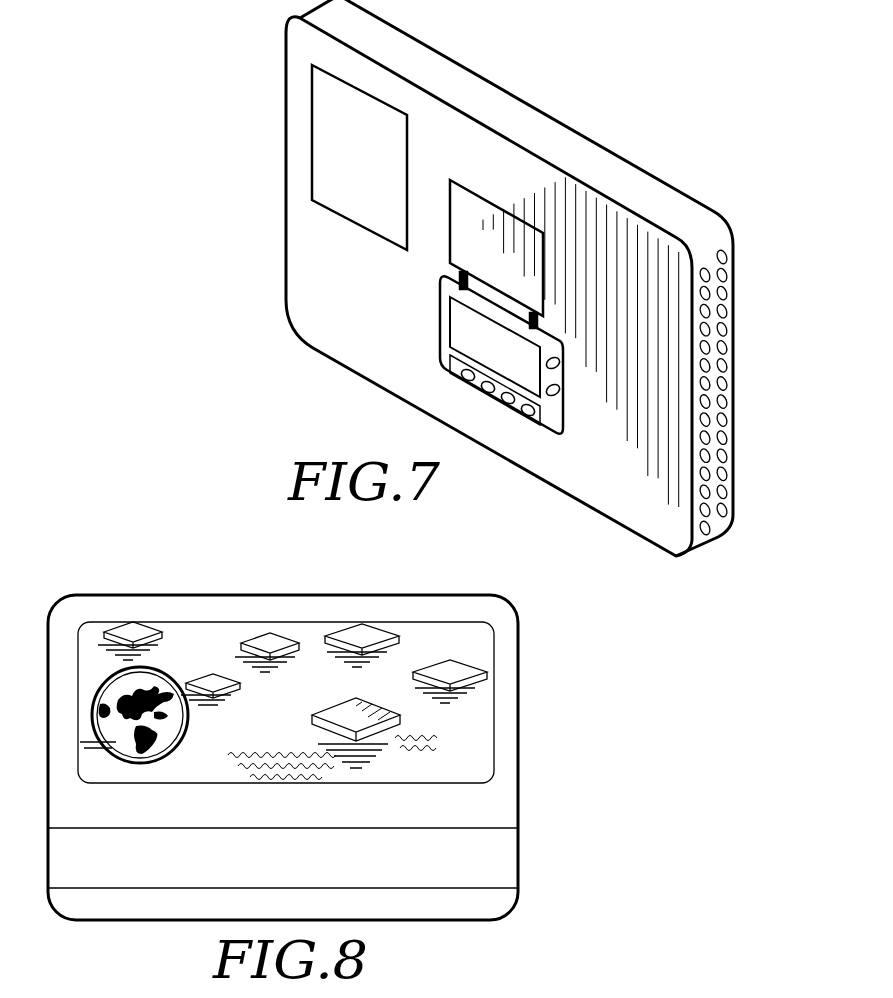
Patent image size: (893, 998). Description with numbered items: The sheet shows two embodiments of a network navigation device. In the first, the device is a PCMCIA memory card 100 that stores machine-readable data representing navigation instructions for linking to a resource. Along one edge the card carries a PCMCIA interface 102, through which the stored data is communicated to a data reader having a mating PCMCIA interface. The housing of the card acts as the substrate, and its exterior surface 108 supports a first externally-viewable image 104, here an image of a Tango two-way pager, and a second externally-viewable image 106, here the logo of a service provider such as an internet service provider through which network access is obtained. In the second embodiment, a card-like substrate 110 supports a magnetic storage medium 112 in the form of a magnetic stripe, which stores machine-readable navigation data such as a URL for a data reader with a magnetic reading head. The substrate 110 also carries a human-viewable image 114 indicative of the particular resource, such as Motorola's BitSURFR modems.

In FIG. 7, the PCMCIA memory card 100 is at (713, 210).
In FIG. 7, the PCMCIA interface 102 is at (724, 330).
In FIG. 7, the first externally-viewable image 104 is at (505, 207).
In FIG. 7, the second externally-viewable image 106 is at (347, 85).
In FIG. 7, the exterior surface 108 is at (660, 525).
In FIG. 8, the substrate 110 is at (520, 652).
In FIG. 8, the magnetic storage medium 112 is at (520, 858).
In FIG. 8, the human-viewable image 114 is at (494, 728).